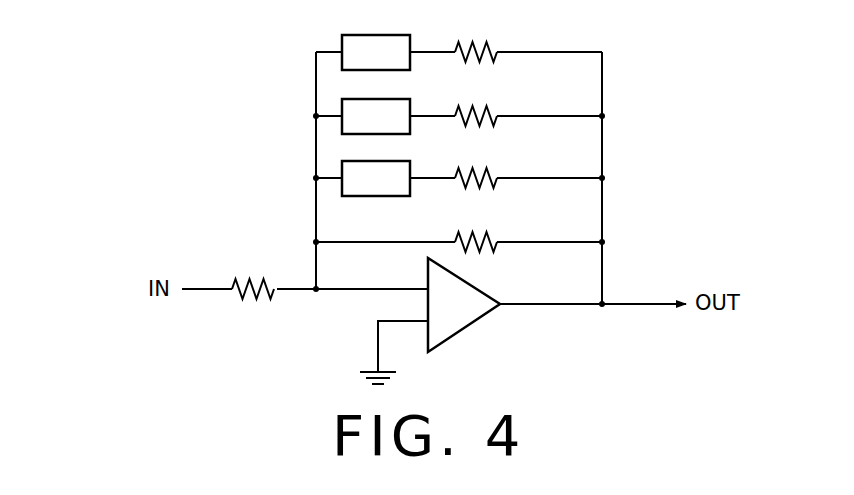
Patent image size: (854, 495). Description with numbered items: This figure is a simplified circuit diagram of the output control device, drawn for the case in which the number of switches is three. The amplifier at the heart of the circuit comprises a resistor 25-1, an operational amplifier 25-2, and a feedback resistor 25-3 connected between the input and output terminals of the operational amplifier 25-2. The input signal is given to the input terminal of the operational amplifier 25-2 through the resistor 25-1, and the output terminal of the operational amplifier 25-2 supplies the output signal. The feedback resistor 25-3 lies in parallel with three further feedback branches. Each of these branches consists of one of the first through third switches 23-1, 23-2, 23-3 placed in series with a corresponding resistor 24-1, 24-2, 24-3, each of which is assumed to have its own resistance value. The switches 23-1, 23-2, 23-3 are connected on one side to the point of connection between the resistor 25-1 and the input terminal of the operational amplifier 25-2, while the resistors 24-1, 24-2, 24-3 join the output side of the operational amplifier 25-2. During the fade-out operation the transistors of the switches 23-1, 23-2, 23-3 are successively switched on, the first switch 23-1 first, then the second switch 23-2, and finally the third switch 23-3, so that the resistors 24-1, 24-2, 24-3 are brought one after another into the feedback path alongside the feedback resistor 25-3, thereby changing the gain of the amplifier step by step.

The first switch 23-1 is at (342, 45).
The second switch 23-2 is at (342, 110).
The third switch 23-3 is at (342, 173).
The resistor 24-1 is at (497, 45).
The resistor 24-2 is at (497, 109).
The resistor 24-3 is at (497, 171).
The resistor 25-1 is at (252, 300).
The operational amplifier 25-2 is at (492, 296).
The feedback resistor 25-3 is at (497, 235).